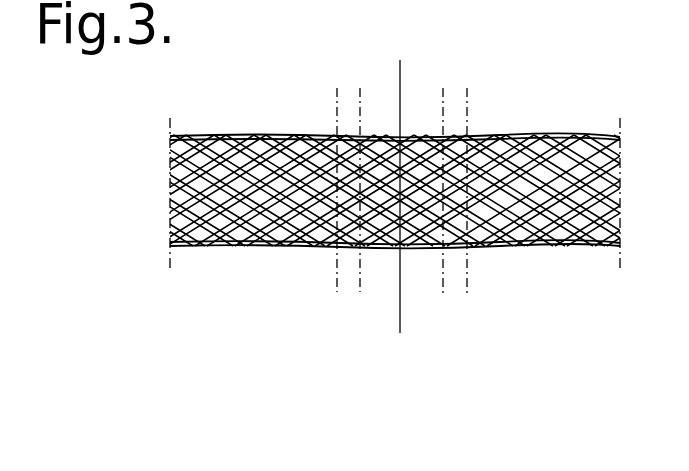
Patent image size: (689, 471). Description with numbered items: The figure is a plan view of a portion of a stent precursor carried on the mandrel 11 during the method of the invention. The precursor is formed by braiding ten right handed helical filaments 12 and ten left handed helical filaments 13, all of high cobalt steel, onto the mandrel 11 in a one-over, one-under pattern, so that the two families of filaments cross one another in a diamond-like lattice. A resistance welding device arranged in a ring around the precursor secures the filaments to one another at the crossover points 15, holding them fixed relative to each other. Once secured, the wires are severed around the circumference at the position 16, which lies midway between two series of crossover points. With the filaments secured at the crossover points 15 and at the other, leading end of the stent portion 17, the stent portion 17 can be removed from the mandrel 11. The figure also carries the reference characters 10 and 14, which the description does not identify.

The braided stent 10 is at (321, 247).
The mandrel 11 is at (580, 232).
The right handed helical filaments 12 is at (222, 233).
The left handed helical filaments 13 is at (534, 232).
The first cross-section plane 14 is at (345, 105).
The crossover points 15 is at (462, 108).
The severing position 16 is at (400, 65).
The stent portion 17 is at (540, 135).